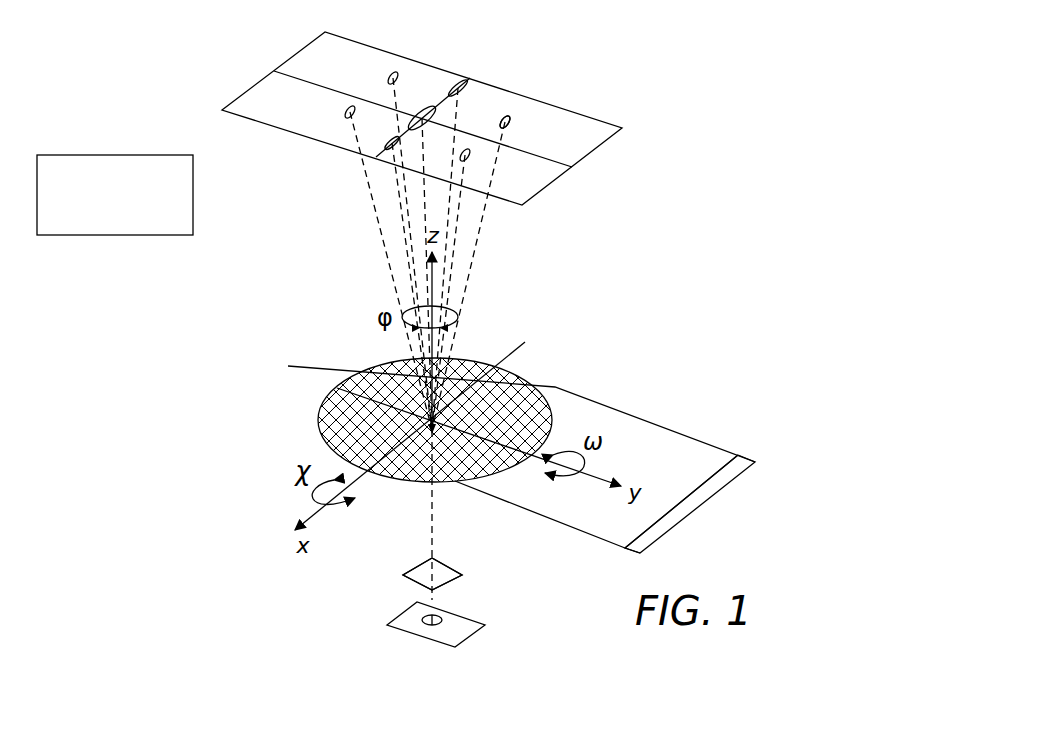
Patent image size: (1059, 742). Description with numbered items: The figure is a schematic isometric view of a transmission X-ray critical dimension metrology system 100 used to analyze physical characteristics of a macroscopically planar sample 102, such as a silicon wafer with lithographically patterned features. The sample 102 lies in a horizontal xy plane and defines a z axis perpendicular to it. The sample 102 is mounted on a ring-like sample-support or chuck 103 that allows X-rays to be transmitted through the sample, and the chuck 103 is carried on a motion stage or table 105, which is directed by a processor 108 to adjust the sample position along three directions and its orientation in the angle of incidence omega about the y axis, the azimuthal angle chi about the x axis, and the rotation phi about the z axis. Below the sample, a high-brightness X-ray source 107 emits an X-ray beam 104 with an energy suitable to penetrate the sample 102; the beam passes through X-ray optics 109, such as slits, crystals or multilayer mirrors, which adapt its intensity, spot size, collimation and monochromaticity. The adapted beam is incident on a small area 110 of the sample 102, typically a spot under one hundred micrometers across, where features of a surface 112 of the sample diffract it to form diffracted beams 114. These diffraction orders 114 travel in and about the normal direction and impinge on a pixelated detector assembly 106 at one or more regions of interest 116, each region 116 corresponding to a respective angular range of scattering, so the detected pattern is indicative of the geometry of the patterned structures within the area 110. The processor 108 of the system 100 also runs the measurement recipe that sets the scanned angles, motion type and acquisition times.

The transmission X-ray critical dimension (T-XCD) metrology system 100 is at (689, 103).
The sample 102 is at (548, 386).
The sample-support (chuck) 103 is at (675, 432).
The X-ray beam 104 is at (433, 549).
The xyz-omega-chi-phi table (motion stage) 105 is at (722, 493).
The detector assembly 106 is at (317, 125).
The X-ray source 107 is at (408, 632).
The processor 108 is at (115, 236).
The X-ray optics 109 is at (403, 575).
The area 110 is at (488, 291).
The surface 112 is at (510, 301).
The diffracted beams (diffraction orders) 114 is at (360, 234).
The regions of interest (ROIs) 116 is at (427, 108).